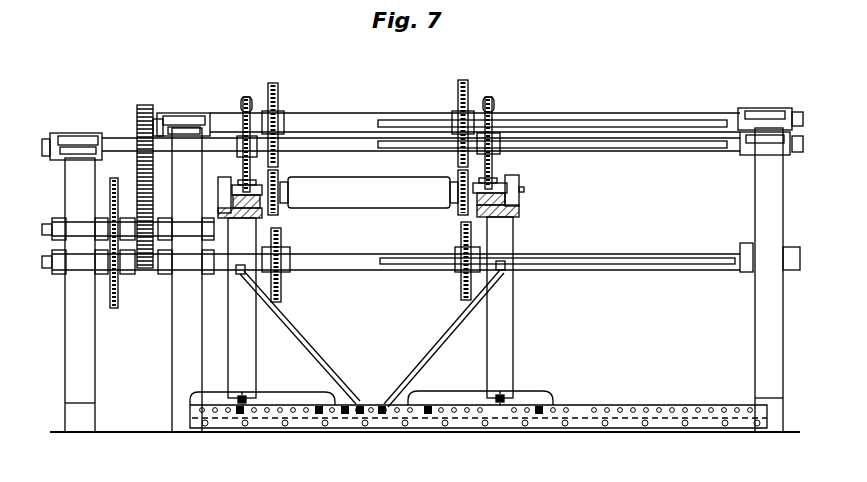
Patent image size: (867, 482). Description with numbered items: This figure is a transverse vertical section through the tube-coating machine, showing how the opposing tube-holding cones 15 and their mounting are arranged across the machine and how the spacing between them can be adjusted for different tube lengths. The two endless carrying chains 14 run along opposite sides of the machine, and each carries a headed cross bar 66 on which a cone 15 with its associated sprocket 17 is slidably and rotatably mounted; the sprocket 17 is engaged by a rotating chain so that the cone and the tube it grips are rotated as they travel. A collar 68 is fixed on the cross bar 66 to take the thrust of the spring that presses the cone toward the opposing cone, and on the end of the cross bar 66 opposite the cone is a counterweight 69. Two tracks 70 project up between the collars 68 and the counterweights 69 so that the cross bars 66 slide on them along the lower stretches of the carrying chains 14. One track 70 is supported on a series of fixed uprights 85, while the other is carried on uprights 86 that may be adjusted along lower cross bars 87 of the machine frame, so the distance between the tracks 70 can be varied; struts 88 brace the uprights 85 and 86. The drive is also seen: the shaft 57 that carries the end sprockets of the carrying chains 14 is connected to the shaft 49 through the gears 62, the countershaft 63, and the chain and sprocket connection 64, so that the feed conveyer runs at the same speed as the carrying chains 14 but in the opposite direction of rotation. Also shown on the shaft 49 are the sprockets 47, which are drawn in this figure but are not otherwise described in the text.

The carrying chains 14 is at (241, 181).
The tube-holding cones 15 is at (290, 180).
The sprockets 17 is at (279, 165).
The sprocket wheel 47 is at (283, 243).
The shaft 49 is at (366, 270).
The shaft 57 is at (350, 148).
The gears 62 is at (152, 106).
The countershaft 63 is at (45, 218).
The chain and sprocket connection 64 is at (115, 308).
The headed cross bar 66 is at (218, 204).
The collar 68 is at (254, 185).
The counterweight 69 is at (218, 186).
The tracks 70 is at (262, 210).
The fixed uprights 85 is at (257, 380).
The uprights 86 is at (513, 346).
The lower cross bars 87 is at (588, 405).
The struts 88 is at (410, 367).